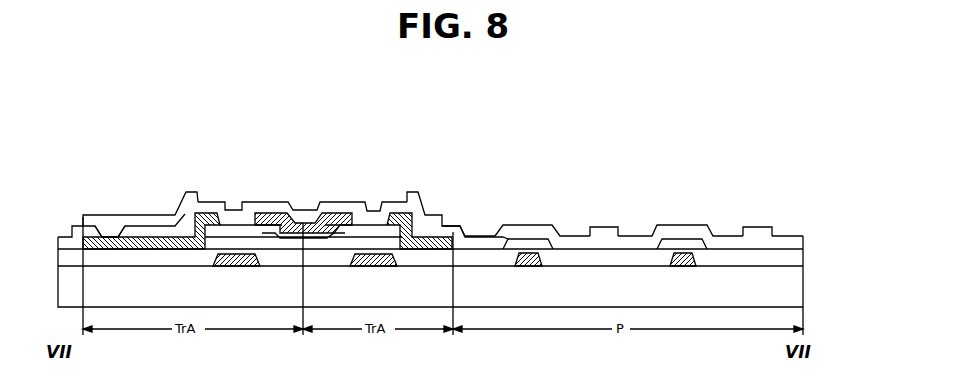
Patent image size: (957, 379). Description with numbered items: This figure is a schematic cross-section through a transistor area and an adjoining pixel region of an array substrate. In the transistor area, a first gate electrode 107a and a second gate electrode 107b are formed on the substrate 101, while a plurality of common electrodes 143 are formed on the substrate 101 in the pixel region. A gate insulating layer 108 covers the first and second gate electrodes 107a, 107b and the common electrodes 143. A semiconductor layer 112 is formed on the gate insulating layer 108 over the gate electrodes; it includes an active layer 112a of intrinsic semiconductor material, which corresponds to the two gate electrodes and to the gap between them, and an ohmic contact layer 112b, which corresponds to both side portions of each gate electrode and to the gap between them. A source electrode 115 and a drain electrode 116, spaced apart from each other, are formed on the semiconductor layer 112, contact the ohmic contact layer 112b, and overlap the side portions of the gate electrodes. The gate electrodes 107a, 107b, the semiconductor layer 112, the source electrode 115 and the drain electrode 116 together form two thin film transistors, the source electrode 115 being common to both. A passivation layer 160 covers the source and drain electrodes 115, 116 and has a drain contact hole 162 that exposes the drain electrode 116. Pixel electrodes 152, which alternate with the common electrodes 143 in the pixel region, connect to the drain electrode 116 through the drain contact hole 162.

The substrate 101 is at (767, 296).
The gate insulating layer 108 is at (803, 258).
The first gate electrode 107a is at (366, 267).
The second gate electrode 107b is at (233, 267).
The common electrode 143 is at (523, 270).
The drain electrode 116 is at (148, 237).
The semiconductor layer 112 is at (393, 137).
The active layer 112a is at (373, 228).
The ohmic contact layer 112b is at (349, 203).
The source electrode 115 is at (278, 204).
The passivation layer 160 is at (792, 240).
The drain contact hole 162 is at (107, 222).
The pixel electrode 152 is at (604, 227).